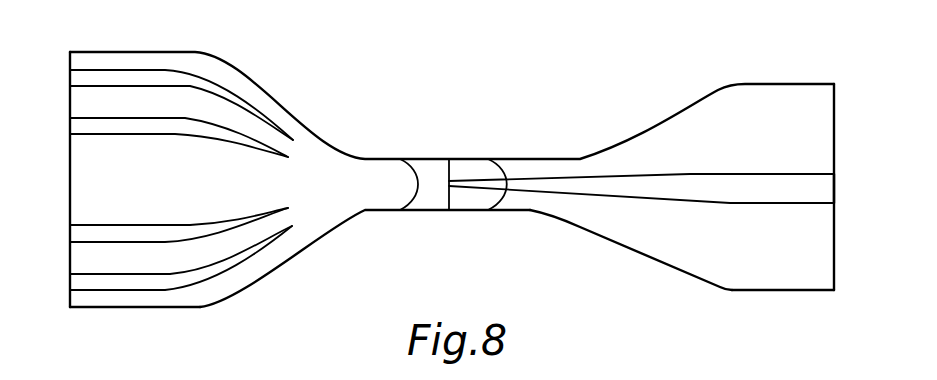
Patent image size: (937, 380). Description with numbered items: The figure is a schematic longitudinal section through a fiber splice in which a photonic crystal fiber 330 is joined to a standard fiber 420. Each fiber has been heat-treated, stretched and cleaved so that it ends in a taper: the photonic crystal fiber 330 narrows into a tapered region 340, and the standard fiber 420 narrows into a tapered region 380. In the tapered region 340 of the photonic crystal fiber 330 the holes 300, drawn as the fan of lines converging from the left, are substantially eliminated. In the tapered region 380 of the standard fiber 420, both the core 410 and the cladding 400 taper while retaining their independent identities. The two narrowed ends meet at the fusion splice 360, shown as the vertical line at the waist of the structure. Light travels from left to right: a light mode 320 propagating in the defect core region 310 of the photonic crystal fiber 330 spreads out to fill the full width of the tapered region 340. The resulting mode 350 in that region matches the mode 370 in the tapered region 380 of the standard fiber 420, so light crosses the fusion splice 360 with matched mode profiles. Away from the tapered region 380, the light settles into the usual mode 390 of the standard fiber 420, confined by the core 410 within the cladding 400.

The holes 300 is at (70, 80).
The defect core region 310 is at (70, 182).
The light mode 320 is at (97, 224).
The photonic crystal fiber 330 is at (119, 311).
The tapered region 340 is at (332, 222).
The mode 350 is at (428, 159).
The fusion splice 360 is at (449, 212).
The mode 370 is at (530, 122).
The tapered region 380 is at (599, 234).
The usual mode 390 is at (762, 232).
The cladding 400 is at (836, 118).
The core 410 is at (836, 190).
The standard fiber 420 is at (761, 293).